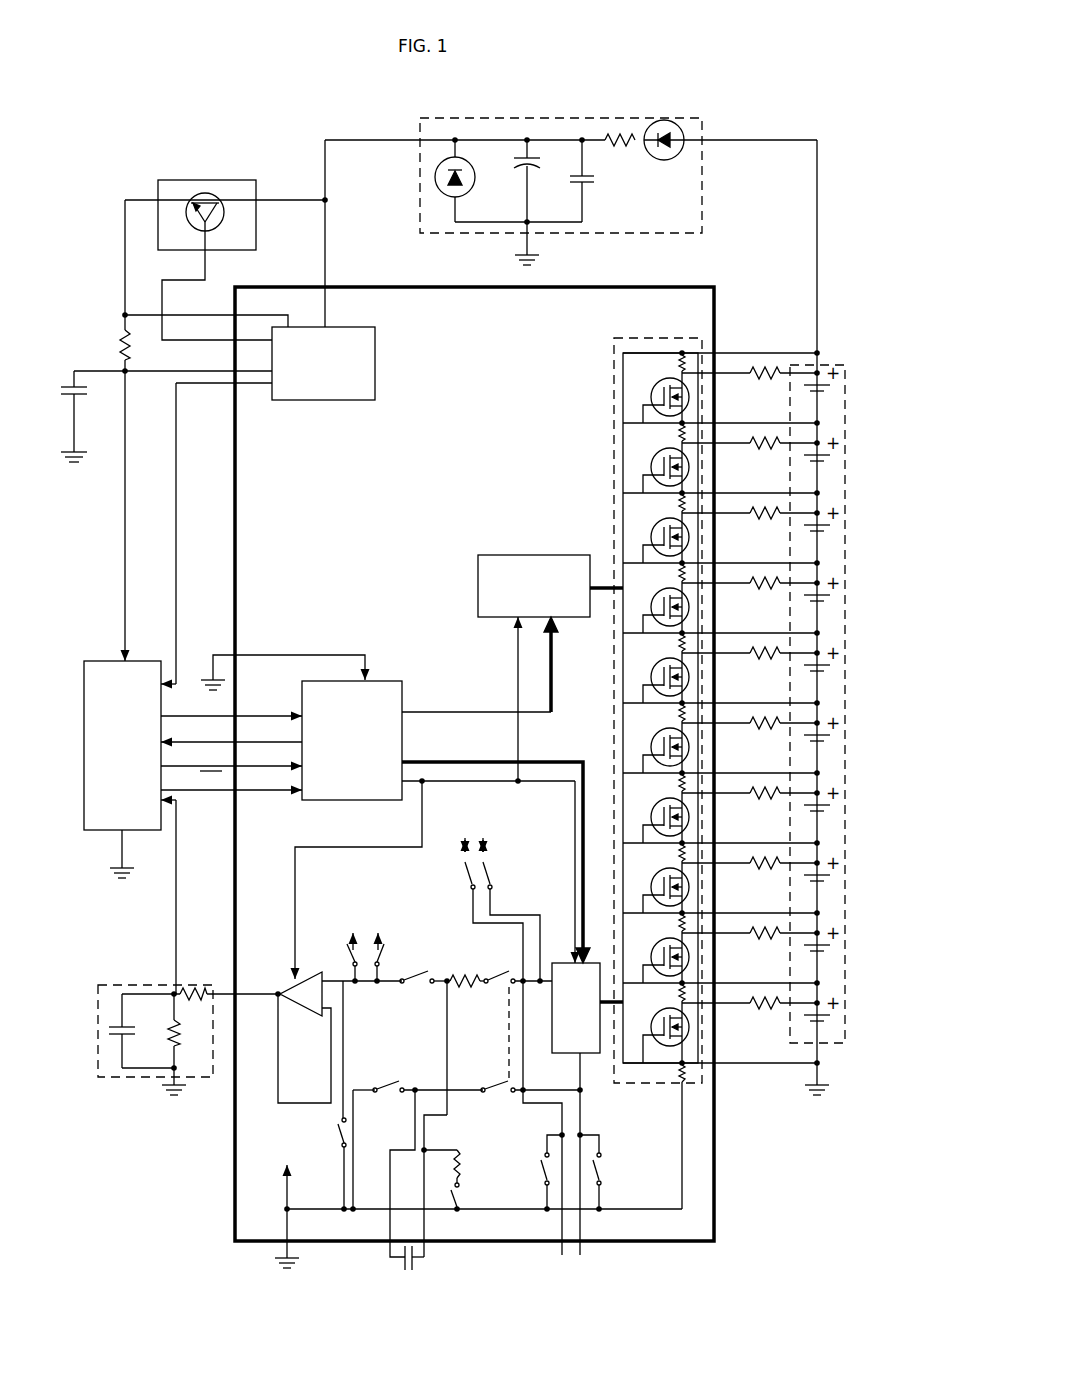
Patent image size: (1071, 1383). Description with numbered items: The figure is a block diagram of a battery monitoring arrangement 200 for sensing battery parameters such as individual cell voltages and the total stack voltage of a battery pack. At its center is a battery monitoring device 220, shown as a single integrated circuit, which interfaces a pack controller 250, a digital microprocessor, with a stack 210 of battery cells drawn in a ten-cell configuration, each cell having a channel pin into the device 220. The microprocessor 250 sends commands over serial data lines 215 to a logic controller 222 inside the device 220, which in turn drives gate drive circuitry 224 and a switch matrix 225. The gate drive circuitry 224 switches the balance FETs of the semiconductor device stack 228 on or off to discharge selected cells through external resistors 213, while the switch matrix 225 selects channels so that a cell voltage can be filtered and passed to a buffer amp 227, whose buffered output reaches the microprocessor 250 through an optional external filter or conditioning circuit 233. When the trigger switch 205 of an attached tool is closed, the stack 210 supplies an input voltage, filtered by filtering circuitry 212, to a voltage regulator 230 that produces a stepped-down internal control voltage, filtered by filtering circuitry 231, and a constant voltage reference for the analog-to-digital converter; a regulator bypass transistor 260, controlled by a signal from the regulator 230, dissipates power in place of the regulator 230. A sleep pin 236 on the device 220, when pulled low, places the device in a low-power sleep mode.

The battery monitoring arrangement 200 is at (852, 78).
The trigger switch 205 is at (745, 140).
The stack of battery cells 210 is at (845, 382).
The filtering circuitry 212 is at (455, 118).
The external resistors 213 is at (778, 372).
The serial data lines 215 is at (196, 802).
The battery monitoring device 220 is at (607, 287).
The logic controller 222 is at (397, 681).
The gate drive circuitry 224 is at (517, 555).
The switch matrix 225 is at (587, 1008).
The buffer amp 227 is at (312, 1018).
The semiconductor device stack 228 is at (614, 338).
The voltage regulator 230 is at (375, 352).
The filtering circuitry 231 is at (62, 390).
The external filter or conditioning circuit 233 is at (98, 1053).
The SLEEP pin 236 is at (352, 790).
The pack controller 250 is at (122, 769).
The regulator bypass transistor 260 is at (205, 180).